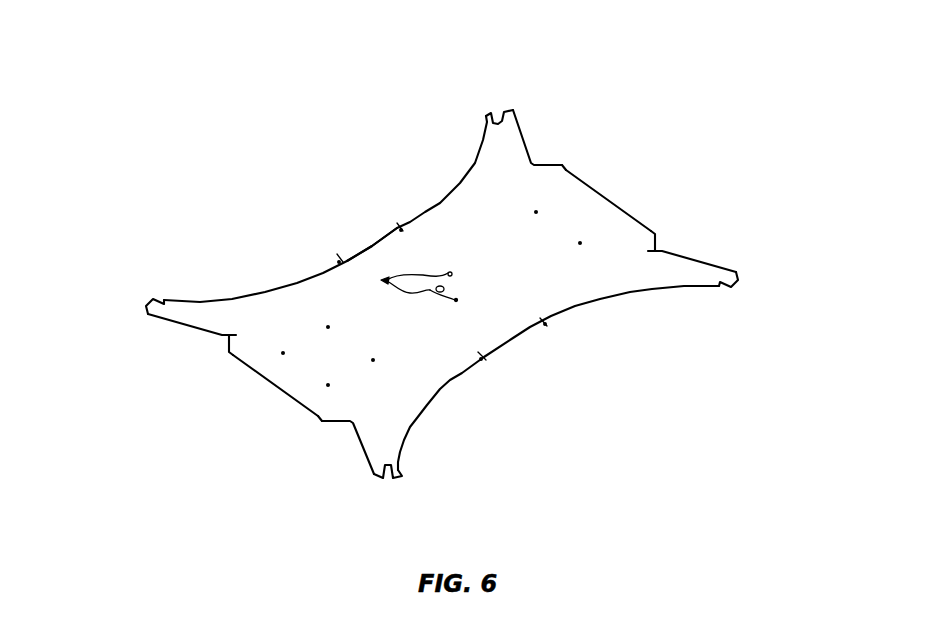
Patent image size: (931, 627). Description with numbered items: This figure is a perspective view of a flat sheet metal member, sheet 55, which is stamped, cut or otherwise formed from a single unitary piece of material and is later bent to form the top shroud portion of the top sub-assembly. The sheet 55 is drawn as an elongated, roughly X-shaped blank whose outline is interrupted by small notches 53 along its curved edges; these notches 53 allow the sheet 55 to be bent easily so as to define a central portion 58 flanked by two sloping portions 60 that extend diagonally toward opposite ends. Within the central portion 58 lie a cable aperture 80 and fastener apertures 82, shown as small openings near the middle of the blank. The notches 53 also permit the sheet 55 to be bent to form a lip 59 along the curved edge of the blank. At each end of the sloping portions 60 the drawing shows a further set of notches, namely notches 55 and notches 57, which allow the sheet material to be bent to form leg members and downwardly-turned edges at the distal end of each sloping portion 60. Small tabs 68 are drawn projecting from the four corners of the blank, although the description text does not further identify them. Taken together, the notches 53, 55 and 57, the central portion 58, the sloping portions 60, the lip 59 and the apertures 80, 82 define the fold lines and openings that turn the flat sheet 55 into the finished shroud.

The notches 53 is at (340, 257).
The sheet 55 is at (535, 160).
The notches 57 is at (563, 160).
The central portion 58 is at (387, 263).
The lip 59 is at (397, 226).
The sloping portions 60 is at (555, 222).
The end tab 68 is at (490, 112).
The cable aperture 80 is at (458, 288).
The fastener apertures 82 is at (402, 280).